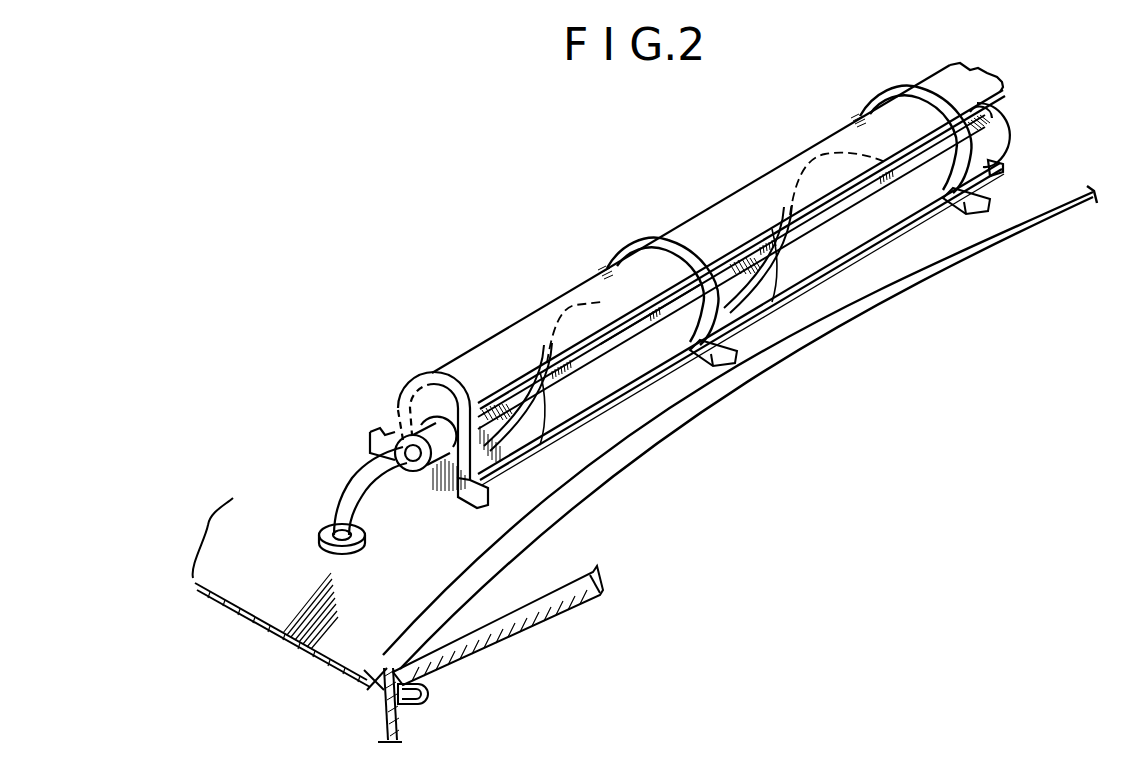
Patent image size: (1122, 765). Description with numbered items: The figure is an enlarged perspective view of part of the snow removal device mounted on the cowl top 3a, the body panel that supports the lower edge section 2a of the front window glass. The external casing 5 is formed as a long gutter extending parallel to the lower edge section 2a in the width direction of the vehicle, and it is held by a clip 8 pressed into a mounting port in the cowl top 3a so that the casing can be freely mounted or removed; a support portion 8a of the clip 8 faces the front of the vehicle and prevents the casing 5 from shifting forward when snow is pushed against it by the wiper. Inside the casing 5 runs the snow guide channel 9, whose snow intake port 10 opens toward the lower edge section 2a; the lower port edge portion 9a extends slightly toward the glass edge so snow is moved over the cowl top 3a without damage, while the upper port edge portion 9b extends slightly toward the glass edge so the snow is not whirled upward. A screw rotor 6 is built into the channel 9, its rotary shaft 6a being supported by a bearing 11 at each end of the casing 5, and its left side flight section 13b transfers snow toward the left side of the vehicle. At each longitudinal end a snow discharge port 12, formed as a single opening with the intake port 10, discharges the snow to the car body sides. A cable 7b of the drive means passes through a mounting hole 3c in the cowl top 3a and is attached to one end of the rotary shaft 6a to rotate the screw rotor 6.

The lower edge section 2a is at (537, 600).
The cowl top 3a is at (317, 637).
The mounting hole 3c is at (345, 552).
The external casing 5 is at (517, 330).
The screw rotor 6 is at (607, 400).
The rotary shaft 6a is at (643, 323).
The cable 7b is at (353, 487).
The clip 8 is at (903, 103).
The support portion 8a is at (736, 364).
The snow guide channel 9 is at (838, 238).
The lower port edge portion 9a is at (763, 292).
The upper port edge portion 9b is at (823, 163).
The snow intake port 10 is at (903, 222).
The bearing 11 is at (428, 372).
The snow discharge port 12 is at (558, 400).
The left side flight section 13b is at (513, 417).